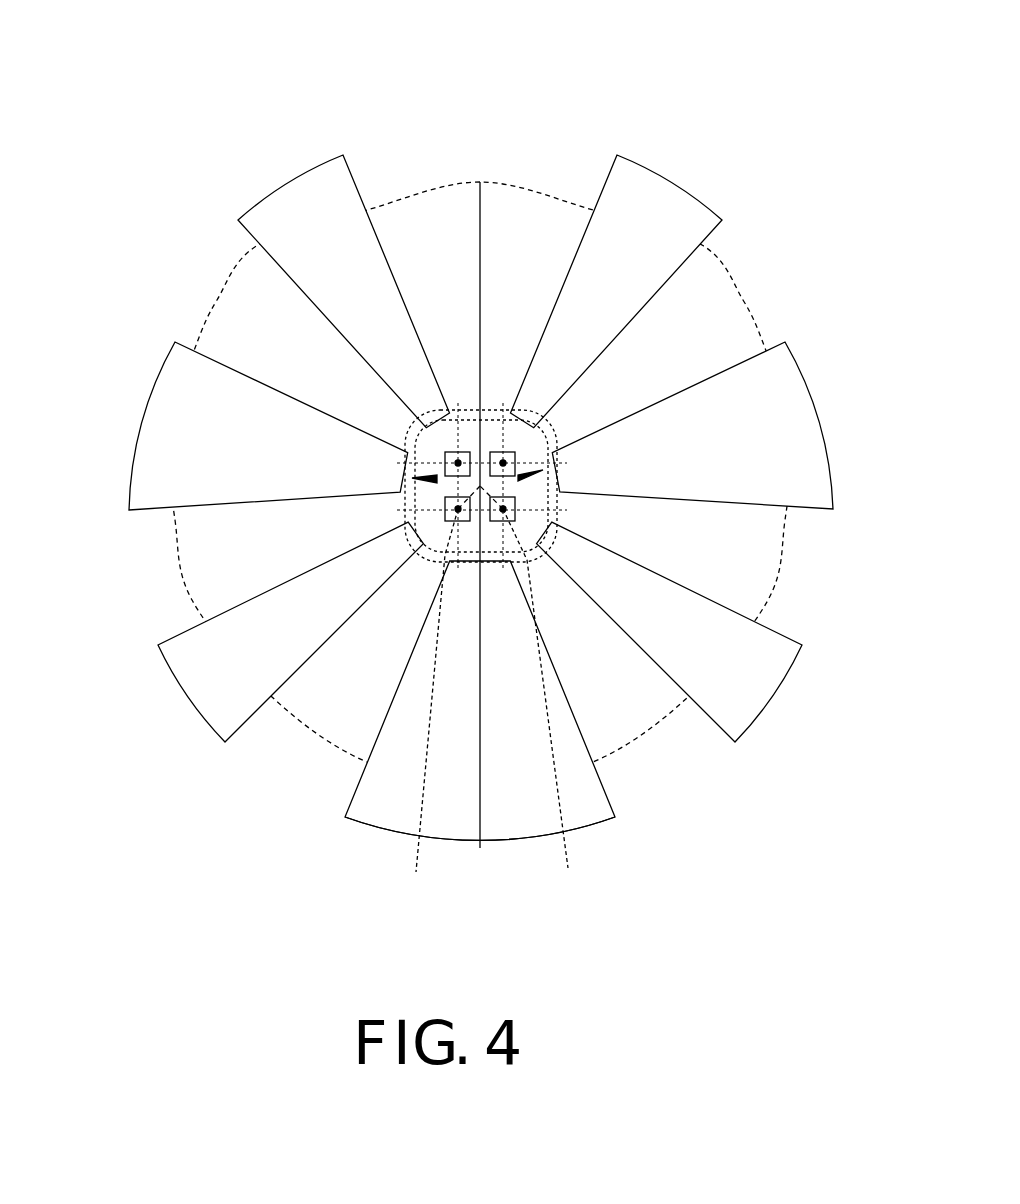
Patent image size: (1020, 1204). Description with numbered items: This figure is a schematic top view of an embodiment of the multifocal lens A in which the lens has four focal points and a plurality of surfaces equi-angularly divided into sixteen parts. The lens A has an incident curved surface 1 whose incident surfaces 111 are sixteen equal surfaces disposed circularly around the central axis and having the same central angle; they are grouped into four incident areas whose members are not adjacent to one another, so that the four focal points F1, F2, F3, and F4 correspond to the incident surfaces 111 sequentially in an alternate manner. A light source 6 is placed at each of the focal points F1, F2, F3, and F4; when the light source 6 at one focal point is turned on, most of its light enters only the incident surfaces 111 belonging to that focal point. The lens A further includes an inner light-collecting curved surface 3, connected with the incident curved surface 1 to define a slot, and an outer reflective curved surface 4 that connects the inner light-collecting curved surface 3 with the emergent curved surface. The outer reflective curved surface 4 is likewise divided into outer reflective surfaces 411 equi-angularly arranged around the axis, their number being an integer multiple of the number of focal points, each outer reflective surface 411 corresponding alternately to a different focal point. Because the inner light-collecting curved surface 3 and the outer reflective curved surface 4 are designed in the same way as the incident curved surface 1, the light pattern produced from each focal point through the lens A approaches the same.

The incident curved surface 1 is at (480, 486).
The inner light-collecting curved surface 3 is at (480, 486).
The outer reflective curved surface 4 is at (166, 375).
The light source 6 is at (463, 450).
The incident surfaces 111 is at (494, 711).
The outer reflective surfaces 411 is at (454, 200).
The lens A is at (221, 148).
The first focal point F1 is at (480, 486).
The second focal point F2 is at (503, 509).
The third focal point F3 is at (480, 486).
The fourth focal point F4 is at (458, 509).